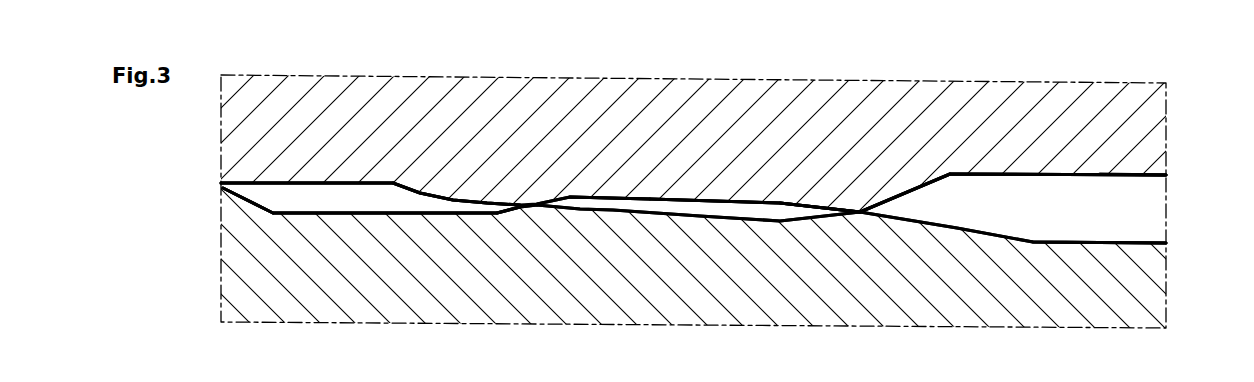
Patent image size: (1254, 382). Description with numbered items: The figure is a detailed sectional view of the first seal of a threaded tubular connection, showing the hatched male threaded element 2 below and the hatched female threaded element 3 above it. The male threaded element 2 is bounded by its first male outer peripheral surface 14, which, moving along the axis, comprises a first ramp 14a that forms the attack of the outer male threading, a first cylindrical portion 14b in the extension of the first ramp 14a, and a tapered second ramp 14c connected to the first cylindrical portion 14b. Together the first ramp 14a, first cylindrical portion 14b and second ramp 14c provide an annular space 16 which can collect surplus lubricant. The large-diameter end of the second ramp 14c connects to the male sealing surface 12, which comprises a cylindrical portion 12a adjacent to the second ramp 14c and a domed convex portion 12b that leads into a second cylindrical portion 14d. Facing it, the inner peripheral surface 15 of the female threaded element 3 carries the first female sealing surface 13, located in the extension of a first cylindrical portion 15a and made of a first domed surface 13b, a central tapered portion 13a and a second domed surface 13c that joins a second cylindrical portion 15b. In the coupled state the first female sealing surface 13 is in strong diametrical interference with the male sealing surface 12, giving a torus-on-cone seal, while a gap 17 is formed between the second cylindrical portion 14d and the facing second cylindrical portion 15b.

The male threaded element 2 is at (570, 296).
The female threaded element 3 is at (686, 124).
The male sealing surface 12 is at (657, 195).
The cylindrical portion 12a is at (640, 196).
The convex portion 12b is at (815, 210).
The first female sealing surface 13 is at (568, 198).
The central tapered portion 13a is at (738, 210).
The first domed surface 13b is at (385, 185).
The second domed surface 13c is at (907, 194).
The first male outer peripheral surface 14 is at (1000, 224).
The first ramp 14a is at (260, 205).
The first cylindrical portion 14b is at (383, 214).
The second ramp 14c is at (492, 217).
The second cylindrical portion 14d is at (1097, 243).
The inner peripheral surface 15 is at (1040, 176).
The first cylindrical portion 15a is at (318, 183).
The second cylindrical portion 15b is at (1145, 177).
The annular space 16 is at (363, 209).
The gap 17 is at (1083, 222).